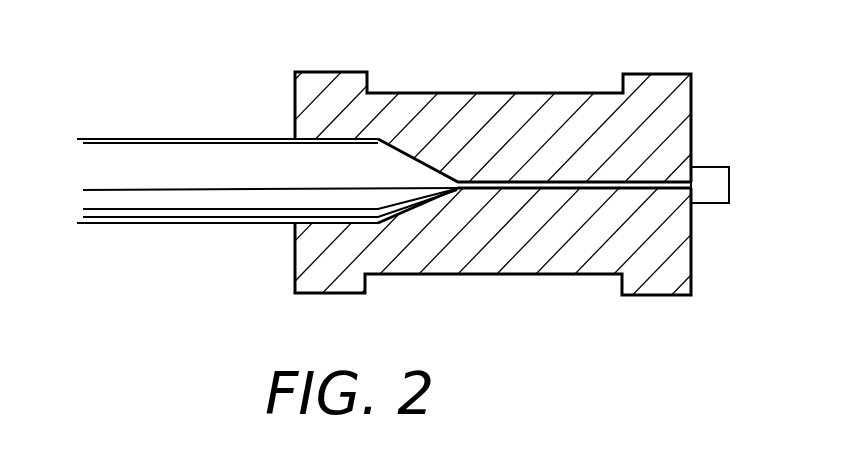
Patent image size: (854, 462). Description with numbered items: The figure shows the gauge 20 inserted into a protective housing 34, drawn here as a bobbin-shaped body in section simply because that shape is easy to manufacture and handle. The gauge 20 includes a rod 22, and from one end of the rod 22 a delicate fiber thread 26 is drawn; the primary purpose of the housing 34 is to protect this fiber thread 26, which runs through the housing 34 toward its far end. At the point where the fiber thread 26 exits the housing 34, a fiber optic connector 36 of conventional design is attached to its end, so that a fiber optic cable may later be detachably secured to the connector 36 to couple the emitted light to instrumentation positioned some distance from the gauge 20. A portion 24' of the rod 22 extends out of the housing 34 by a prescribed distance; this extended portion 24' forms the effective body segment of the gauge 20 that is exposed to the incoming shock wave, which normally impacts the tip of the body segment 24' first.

The gauge 20 is at (126, 86).
The rod 22 is at (152, 224).
The extended portion of the rod 24' is at (186, 113).
The fiber thread 26 is at (571, 182).
The protective housing 34 is at (455, 93).
The fiber optic connector 36 is at (717, 167).